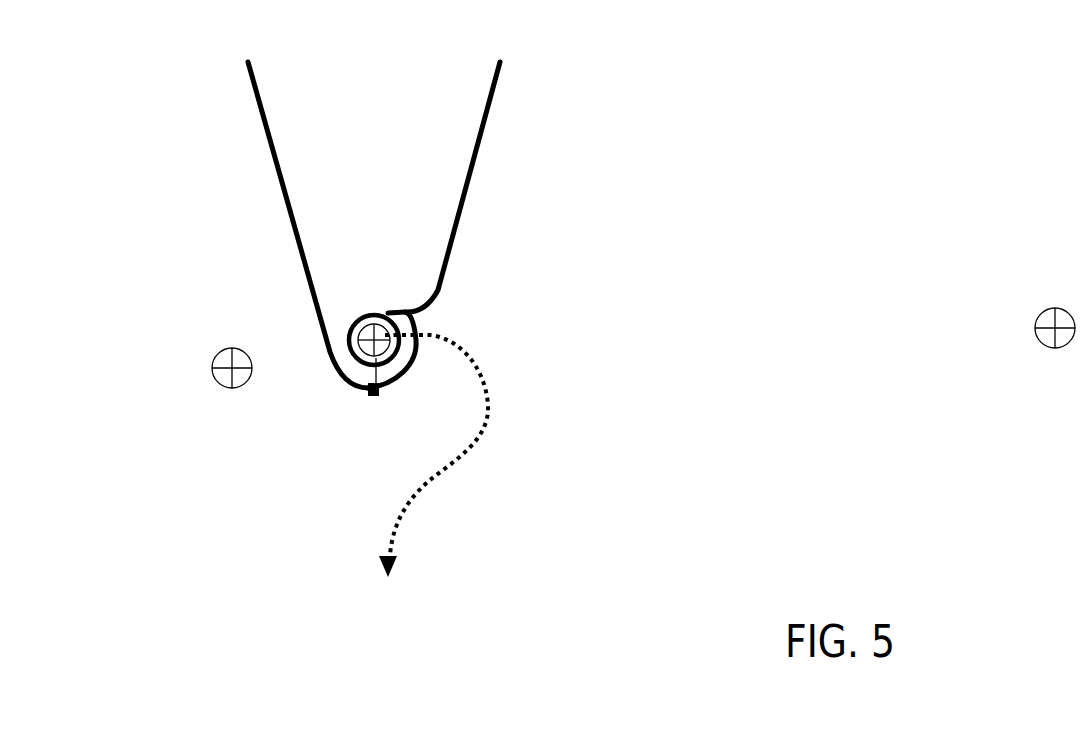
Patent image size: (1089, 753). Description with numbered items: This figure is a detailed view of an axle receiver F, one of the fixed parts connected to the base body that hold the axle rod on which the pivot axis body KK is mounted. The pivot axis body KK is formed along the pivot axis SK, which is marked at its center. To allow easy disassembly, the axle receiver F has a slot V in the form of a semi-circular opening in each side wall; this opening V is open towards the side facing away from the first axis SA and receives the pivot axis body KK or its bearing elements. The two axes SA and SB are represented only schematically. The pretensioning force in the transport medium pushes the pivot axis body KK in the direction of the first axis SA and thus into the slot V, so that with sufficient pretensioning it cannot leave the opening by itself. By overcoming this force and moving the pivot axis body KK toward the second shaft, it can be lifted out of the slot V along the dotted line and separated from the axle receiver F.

The axle receiver F is at (378, 140).
The pivot axis body KK is at (400, 357).
The pivot axis SK is at (364, 365).
The slot V is at (440, 353).
The first axis SA is at (224, 364).
The second axis SB is at (1047, 320).